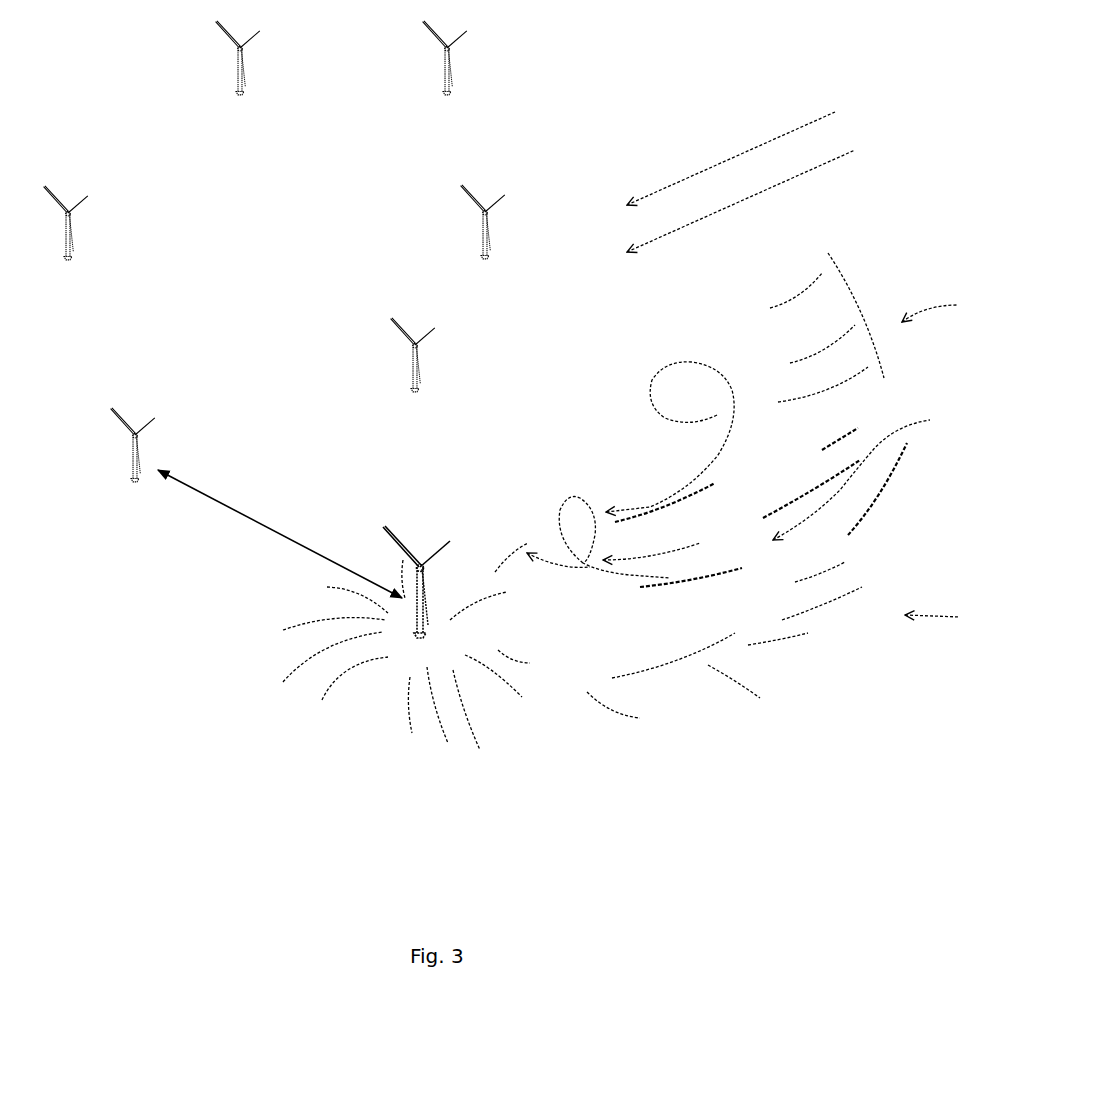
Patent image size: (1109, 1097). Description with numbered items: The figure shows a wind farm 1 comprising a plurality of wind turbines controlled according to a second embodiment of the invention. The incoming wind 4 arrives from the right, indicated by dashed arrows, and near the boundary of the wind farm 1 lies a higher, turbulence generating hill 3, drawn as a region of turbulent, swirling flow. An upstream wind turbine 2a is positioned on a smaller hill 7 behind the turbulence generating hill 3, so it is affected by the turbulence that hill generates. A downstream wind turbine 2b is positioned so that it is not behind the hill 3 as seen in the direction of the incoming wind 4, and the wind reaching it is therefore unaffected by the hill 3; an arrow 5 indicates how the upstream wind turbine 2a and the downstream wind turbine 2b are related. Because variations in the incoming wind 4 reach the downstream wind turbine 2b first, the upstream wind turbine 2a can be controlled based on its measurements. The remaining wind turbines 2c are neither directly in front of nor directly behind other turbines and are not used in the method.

The wind farm 1 is at (190, 733).
The upstream wind turbine 2a is at (425, 606).
The downstream wind turbine 2b is at (130, 467).
The remaining wind turbines 2c is at (445, 77).
The turbulence generating hill 3 is at (840, 300).
The incoming wind 4 is at (748, 195).
The arrows 5 is at (240, 513).
The smaller hill 7 is at (415, 650).